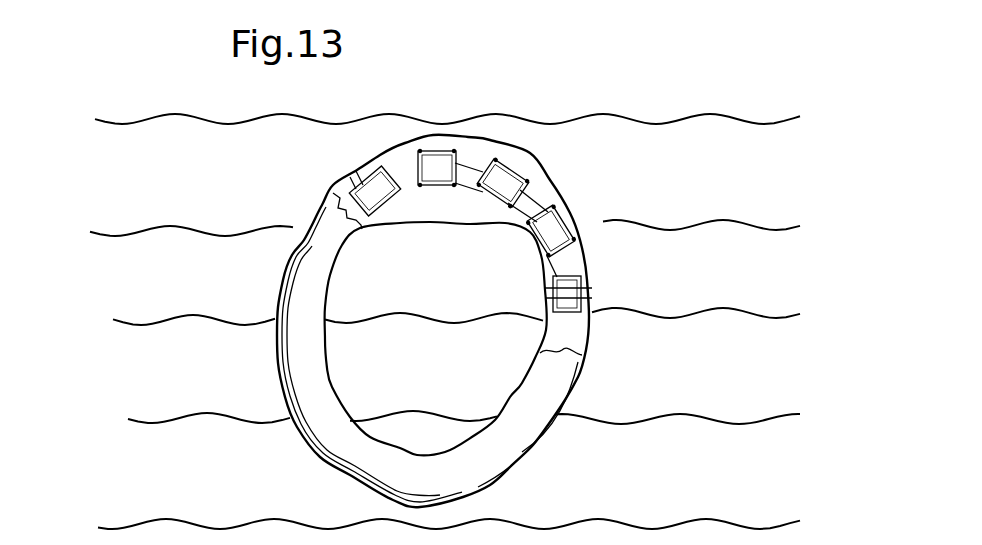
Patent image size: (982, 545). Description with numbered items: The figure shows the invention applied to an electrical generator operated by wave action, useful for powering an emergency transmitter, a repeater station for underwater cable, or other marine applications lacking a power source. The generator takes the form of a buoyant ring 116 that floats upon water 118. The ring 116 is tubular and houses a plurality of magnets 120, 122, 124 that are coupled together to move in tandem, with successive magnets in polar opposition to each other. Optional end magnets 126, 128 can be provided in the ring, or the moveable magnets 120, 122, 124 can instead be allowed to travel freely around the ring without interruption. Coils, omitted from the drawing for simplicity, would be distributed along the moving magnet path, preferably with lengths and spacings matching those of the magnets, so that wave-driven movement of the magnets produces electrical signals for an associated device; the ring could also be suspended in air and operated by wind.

The buoyant ring 116 is at (306, 199).
The water 118 is at (743, 283).
The magnet 120 is at (450, 139).
The magnet 122 is at (518, 158).
The magnet 124 is at (556, 208).
The end magnet 126 is at (345, 180).
The end magnet 128 is at (571, 278).